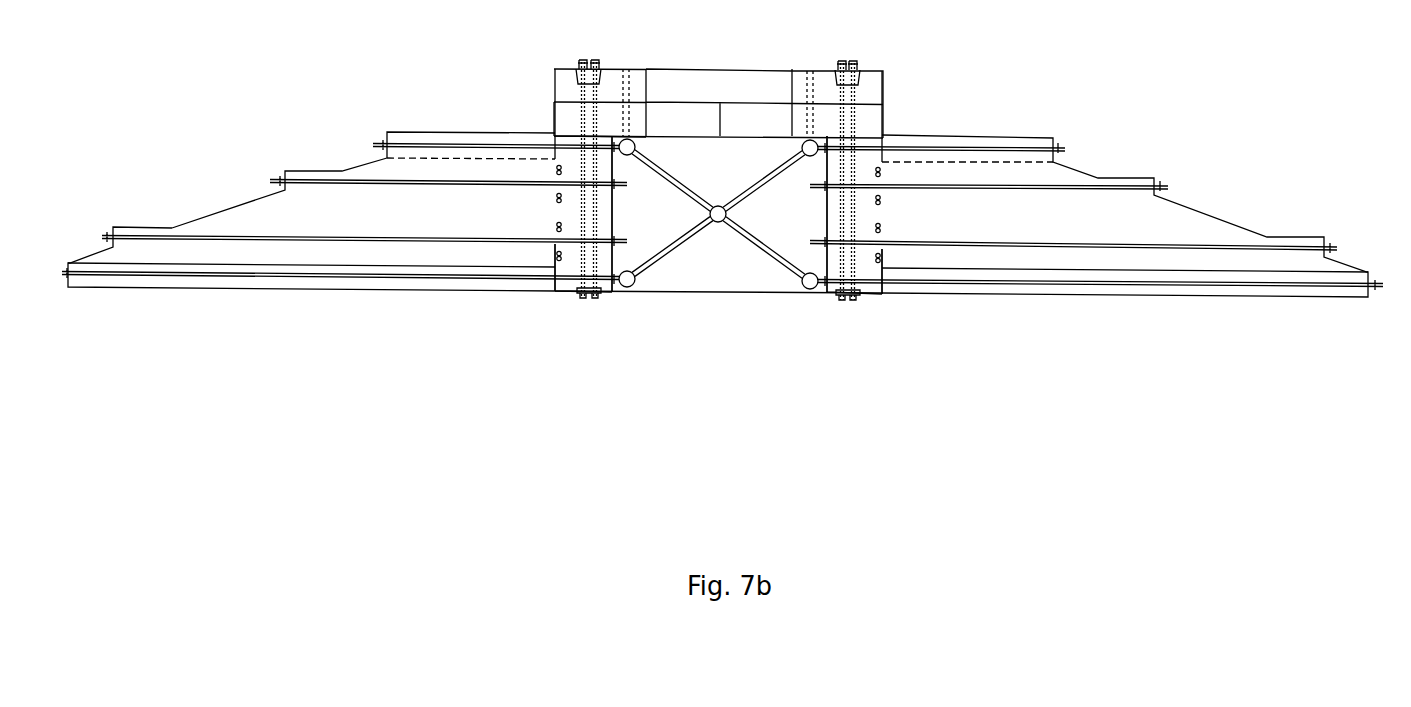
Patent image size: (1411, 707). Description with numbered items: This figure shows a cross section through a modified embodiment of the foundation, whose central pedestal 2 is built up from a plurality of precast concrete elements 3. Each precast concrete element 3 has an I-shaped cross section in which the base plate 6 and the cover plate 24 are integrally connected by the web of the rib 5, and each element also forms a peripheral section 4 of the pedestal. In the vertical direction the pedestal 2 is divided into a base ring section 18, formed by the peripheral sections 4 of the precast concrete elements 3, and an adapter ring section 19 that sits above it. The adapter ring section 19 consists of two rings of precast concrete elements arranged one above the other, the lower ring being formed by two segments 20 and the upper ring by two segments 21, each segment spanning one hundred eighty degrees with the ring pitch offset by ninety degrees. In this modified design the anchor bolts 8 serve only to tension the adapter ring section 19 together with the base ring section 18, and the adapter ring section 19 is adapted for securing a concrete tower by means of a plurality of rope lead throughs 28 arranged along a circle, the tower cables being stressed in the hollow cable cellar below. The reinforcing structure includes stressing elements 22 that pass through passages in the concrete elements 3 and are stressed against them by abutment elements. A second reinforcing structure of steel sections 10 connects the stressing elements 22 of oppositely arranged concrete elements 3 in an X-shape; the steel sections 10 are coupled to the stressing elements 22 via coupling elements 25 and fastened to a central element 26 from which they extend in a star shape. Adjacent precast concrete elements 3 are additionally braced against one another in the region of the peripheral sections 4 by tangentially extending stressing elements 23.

The pedestal 2 is at (623, 57).
The precast concrete element 3 is at (413, 313).
The peripheral section 4 is at (576, 213).
The rib 5 is at (251, 220).
The base plate 6 is at (155, 287).
The anchor bolt 8 is at (594, 61).
The steel section 10 is at (663, 258).
The base ring section 18 is at (863, 217).
The adapter ring section 19 is at (886, 95).
The segment 20 is at (562, 116).
The segment 21 is at (565, 84).
The stressing element 22 is at (1016, 185).
The tangential stressing element 23 is at (880, 203).
The cover plate 24 is at (437, 138).
The coupling element 25 is at (627, 288).
The central element 26 is at (721, 222).
The rope lead through 28 is at (630, 78).